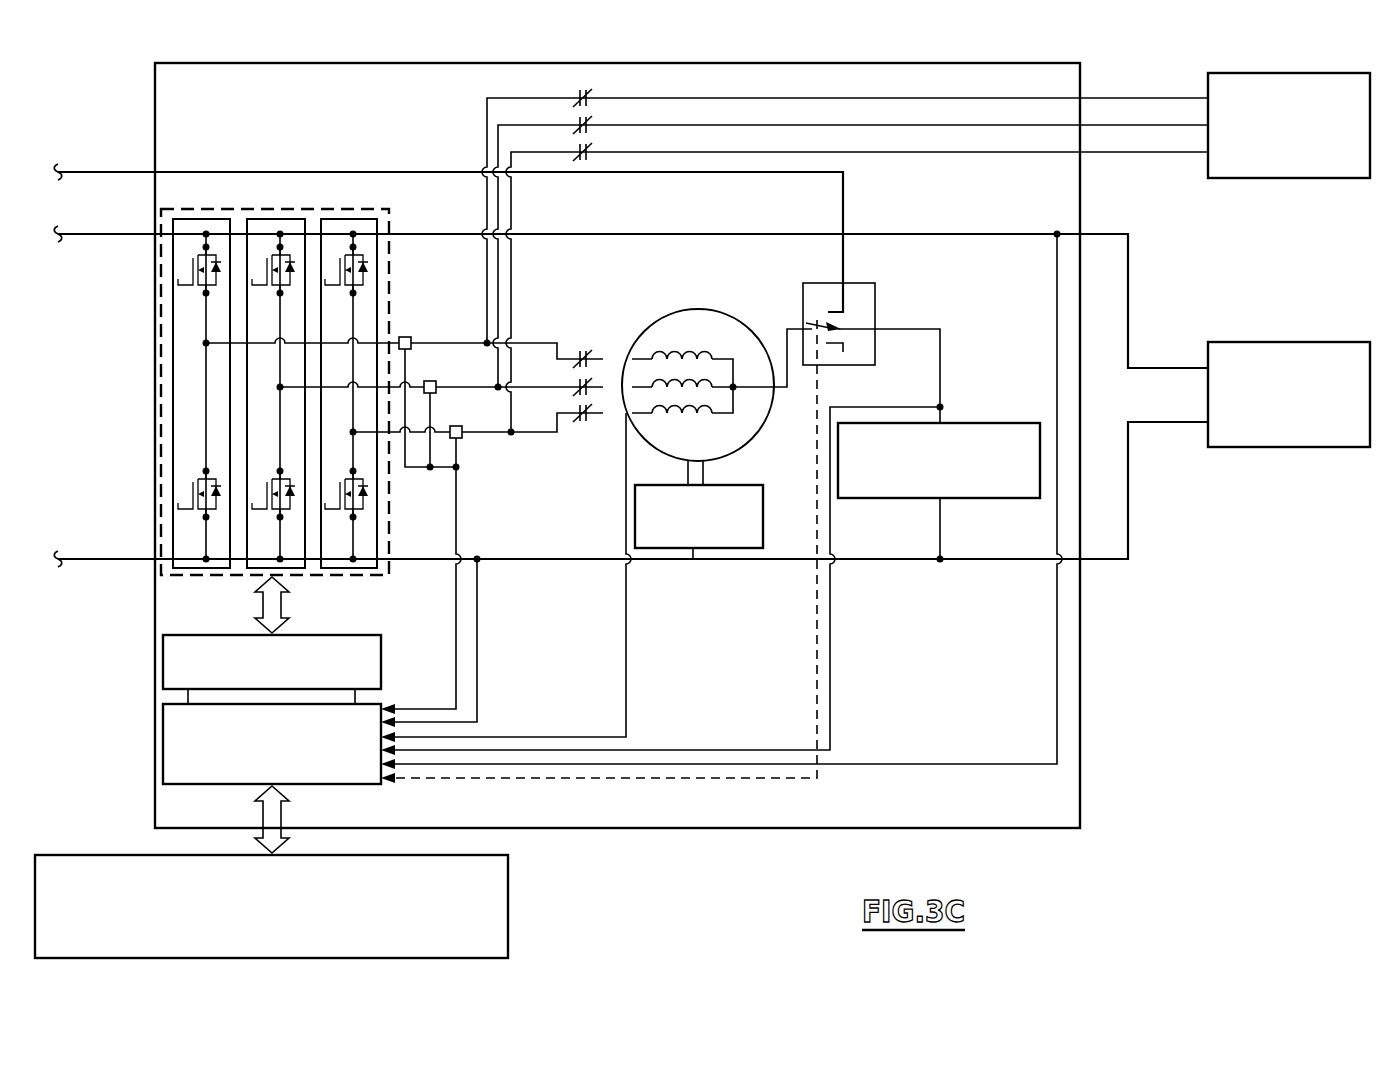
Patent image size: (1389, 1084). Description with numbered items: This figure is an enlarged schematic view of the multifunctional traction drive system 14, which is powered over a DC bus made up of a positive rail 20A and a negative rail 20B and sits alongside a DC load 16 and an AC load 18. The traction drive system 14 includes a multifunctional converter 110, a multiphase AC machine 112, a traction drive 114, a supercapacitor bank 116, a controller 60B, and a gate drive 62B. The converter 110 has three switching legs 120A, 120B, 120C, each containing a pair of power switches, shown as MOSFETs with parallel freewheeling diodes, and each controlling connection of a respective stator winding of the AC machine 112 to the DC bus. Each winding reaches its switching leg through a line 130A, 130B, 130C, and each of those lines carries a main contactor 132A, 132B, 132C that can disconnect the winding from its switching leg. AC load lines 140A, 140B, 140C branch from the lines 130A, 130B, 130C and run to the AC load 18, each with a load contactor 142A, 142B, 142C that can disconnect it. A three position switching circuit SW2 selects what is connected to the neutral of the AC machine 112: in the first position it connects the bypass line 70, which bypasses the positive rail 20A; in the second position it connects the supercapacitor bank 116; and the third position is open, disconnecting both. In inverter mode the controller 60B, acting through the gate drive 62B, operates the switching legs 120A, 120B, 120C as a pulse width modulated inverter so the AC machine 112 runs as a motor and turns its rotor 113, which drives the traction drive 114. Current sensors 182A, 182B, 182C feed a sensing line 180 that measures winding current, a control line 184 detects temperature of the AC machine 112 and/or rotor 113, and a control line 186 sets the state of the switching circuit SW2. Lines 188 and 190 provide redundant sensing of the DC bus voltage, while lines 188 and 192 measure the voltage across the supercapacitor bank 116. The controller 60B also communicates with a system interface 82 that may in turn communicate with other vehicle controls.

The multifunctional traction drive system 14 is at (1082, 83).
The DC load 16 is at (1336, 343).
The AC load 18 is at (1336, 73).
The positive rail 20A is at (1128, 256).
The negative rail 20B is at (1128, 564).
The bypass line 70 is at (116, 172).
The multifunctional converter 110 is at (392, 218).
The switching leg 120A is at (184, 219).
The switching leg 120B is at (265, 219).
The switching leg 120C is at (355, 219).
The line 130A is at (516, 343).
The line 130B is at (529, 387).
The line 130C is at (522, 434).
The main contactor 132A is at (578, 352).
The main contactor 132B is at (580, 392).
The main contactor 132C is at (588, 420).
The multiphase AC machine 112 is at (713, 310).
The rotor 113 is at (703, 475).
The traction drive 114 is at (693, 560).
The supercapacitor bank 116 is at (975, 423).
The switching circuit SW2 is at (875, 300).
The AC load line 140A is at (487, 105).
The AC load line 140B is at (498, 132).
The AC load line 140C is at (511, 195).
The load contactor 142A is at (576, 95).
The load contactor 142B is at (590, 120).
The load contactor 142C is at (590, 158).
The current sensor 182A is at (405, 337).
The current sensor 182B is at (436, 368).
The current sensor 182C is at (456, 411).
The sensing line 180 is at (456, 614).
The control line 184 is at (627, 666).
The control line 186 is at (817, 625).
The line 188 is at (478, 630).
The line 190 is at (1057, 624).
The line 192 is at (831, 661).
The gate drive 62B is at (300, 635).
The controller 60B is at (305, 784).
The system interface 82 is at (508, 906).